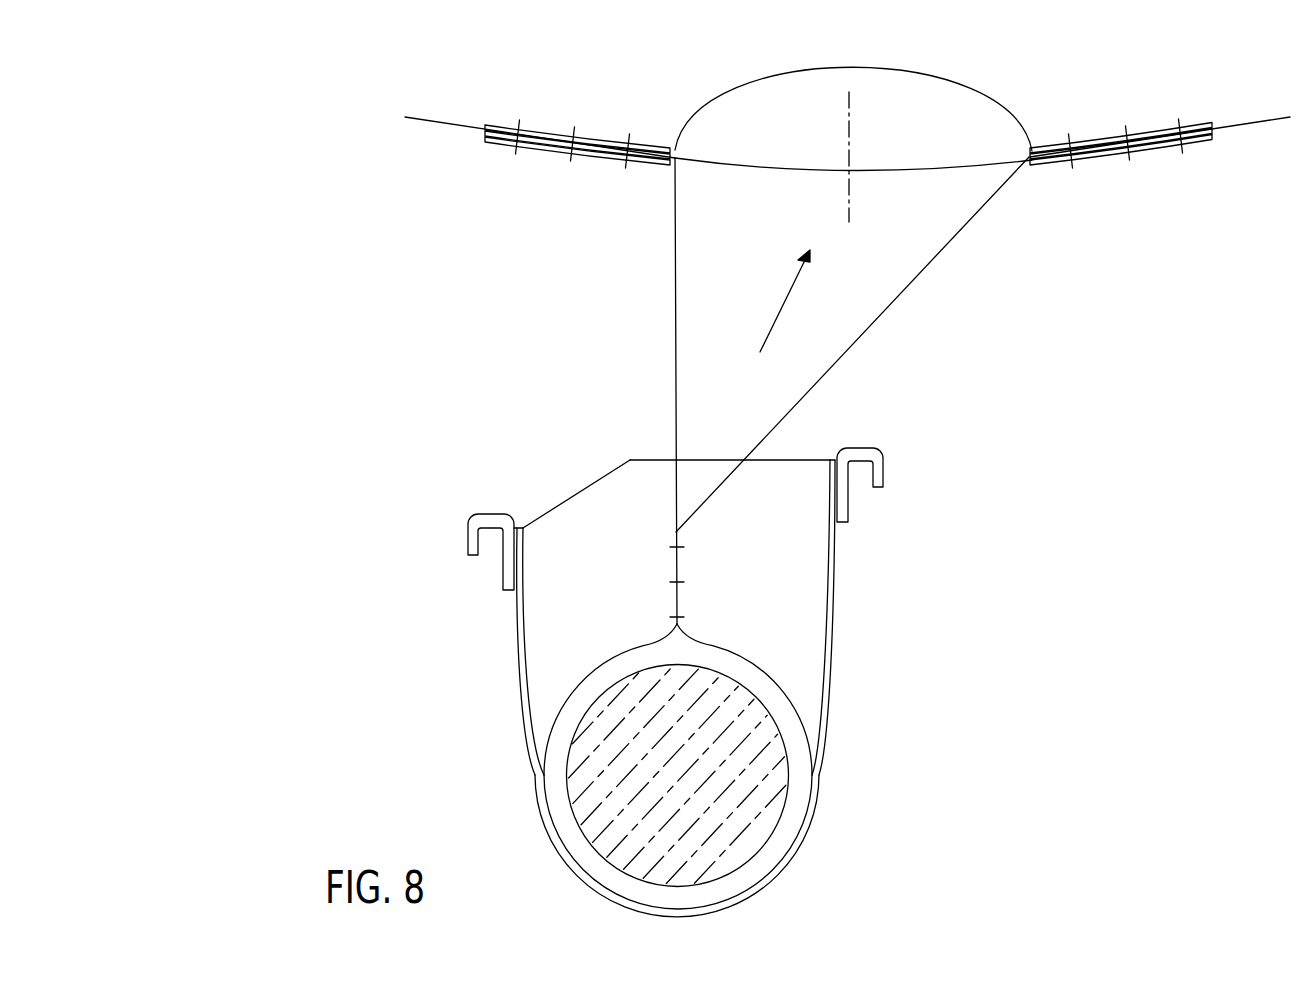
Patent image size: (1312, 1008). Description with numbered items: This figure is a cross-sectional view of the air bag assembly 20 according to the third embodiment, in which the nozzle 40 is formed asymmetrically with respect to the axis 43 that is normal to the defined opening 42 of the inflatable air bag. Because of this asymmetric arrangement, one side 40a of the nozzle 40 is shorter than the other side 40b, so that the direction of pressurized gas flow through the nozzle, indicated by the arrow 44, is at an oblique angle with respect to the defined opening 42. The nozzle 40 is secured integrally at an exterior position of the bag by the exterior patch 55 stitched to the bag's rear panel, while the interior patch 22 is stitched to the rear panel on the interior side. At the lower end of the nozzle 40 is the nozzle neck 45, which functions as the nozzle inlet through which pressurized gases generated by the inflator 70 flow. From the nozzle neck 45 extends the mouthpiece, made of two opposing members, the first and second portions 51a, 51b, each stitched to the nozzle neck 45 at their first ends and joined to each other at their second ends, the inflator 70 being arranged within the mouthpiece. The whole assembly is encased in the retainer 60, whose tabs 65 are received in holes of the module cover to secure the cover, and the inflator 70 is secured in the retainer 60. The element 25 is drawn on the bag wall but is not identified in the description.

The air bag assembly 20 is at (1255, 122).
The interior patch 22 is at (1102, 137).
The dome cover 25 is at (947, 81).
The nozzle 40 is at (811, 390).
The side of the nozzle 40a is at (675, 249).
The side of the nozzle 40b is at (920, 278).
The defined opening 42 is at (877, 164).
The axis 43 is at (849, 121).
The arrow 44 is at (780, 322).
The nozzle neck 45 is at (678, 571).
The first portion of the mouthpiece 51a is at (603, 662).
The second portion of the mouthpiece 51b is at (752, 662).
The exterior patch 55 is at (1158, 152).
The retainer 60 is at (702, 688).
The tabs 65 is at (884, 473).
The inflator 70 is at (600, 828).